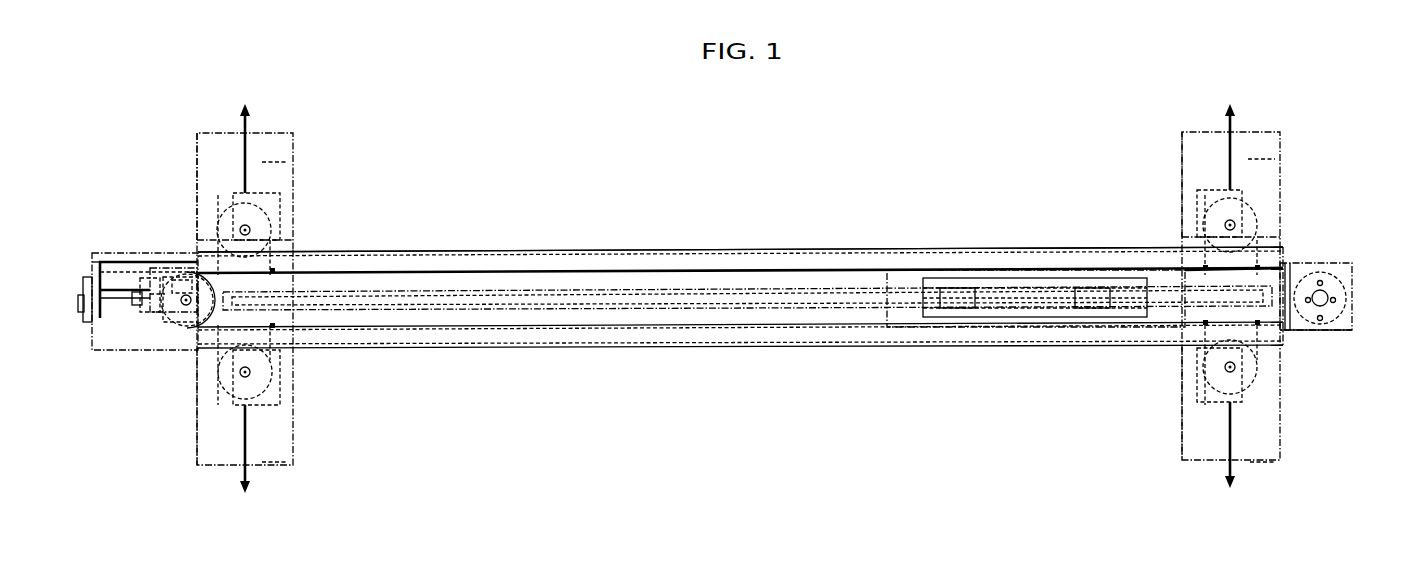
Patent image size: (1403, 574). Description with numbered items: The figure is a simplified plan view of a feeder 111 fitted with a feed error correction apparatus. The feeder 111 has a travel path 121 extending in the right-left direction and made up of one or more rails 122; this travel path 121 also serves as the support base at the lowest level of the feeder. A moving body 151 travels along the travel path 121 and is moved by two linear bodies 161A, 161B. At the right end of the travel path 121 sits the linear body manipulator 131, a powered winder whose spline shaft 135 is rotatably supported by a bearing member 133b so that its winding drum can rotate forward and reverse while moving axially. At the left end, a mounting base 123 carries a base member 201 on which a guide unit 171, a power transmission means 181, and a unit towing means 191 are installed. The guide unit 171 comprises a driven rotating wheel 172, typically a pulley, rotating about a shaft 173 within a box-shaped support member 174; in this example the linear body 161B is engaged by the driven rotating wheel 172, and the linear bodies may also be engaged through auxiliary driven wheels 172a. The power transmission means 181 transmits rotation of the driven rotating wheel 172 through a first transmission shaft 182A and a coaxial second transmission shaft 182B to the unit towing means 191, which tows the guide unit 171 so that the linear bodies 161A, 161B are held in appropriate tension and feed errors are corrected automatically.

The feeder 111 is at (590, 225).
The travel path 121 is at (488, 245).
The rail 122 is at (647, 300).
The mounting base 123 is at (130, 337).
The linear body manipulator 131 is at (1315, 258).
The bearing member 133b is at (1328, 292).
The spline shaft 135 is at (1323, 300).
The moving body 151 is at (1022, 332).
The linear body 161A is at (1185, 265).
The linear body 161B is at (768, 270).
The guide unit 171 is at (288, 190).
The driven rotating wheel 172 is at (235, 214).
The auxiliary driven wheel 172a is at (280, 324).
The shaft 173 is at (187, 318).
The support member 174 is at (212, 150).
The power transmission means 181 is at (124, 313).
The first transmission shaft 182A is at (135, 262).
The second transmission shaft 182B is at (110, 262).
The unit towing means 191 is at (240, 158).
The base member 201 is at (290, 126).